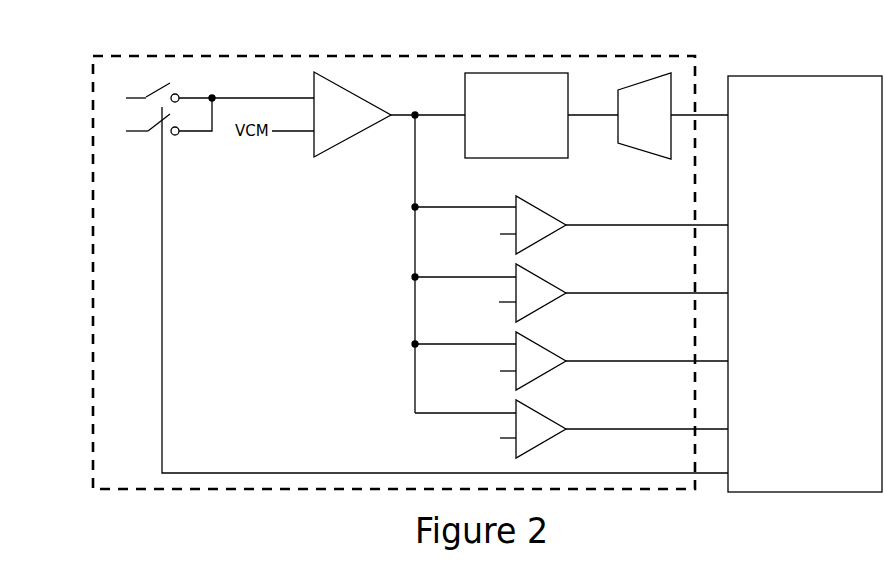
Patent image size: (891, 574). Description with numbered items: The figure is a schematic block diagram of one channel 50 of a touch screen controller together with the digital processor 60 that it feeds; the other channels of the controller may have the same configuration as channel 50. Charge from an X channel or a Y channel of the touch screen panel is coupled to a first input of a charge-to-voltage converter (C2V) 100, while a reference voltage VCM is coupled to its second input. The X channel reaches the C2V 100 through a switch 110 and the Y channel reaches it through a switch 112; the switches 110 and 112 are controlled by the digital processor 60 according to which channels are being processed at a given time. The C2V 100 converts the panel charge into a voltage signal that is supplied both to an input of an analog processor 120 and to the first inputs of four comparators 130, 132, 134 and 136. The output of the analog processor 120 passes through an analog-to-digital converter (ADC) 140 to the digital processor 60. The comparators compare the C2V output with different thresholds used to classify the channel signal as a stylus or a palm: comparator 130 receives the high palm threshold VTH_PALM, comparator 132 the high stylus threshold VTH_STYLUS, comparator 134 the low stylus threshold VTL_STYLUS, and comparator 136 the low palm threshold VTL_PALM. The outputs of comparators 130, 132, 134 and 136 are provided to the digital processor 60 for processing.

The channel 50 is at (318, 56).
The digital processor 60 is at (823, 76).
The charge-to-voltage converter (C2V) 100 is at (340, 140).
The switch 110 is at (152, 90).
The switch 112 is at (150, 128).
The analog processor 120 is at (465, 90).
The comparator 130 is at (542, 210).
The comparator 132 is at (548, 279).
The comparator 134 is at (552, 348).
The comparator 136 is at (552, 417).
The analog-to-digital converter (ADC) 140 is at (644, 86).